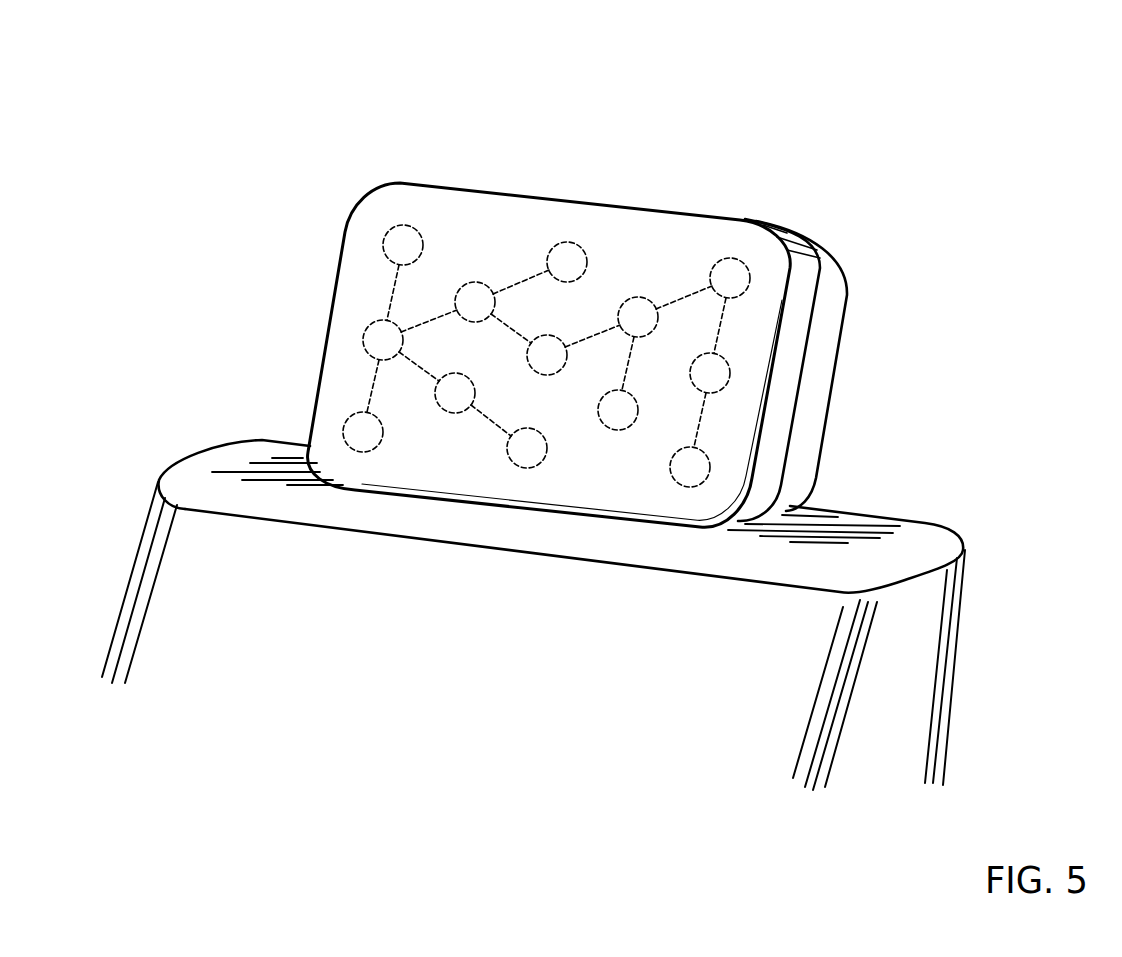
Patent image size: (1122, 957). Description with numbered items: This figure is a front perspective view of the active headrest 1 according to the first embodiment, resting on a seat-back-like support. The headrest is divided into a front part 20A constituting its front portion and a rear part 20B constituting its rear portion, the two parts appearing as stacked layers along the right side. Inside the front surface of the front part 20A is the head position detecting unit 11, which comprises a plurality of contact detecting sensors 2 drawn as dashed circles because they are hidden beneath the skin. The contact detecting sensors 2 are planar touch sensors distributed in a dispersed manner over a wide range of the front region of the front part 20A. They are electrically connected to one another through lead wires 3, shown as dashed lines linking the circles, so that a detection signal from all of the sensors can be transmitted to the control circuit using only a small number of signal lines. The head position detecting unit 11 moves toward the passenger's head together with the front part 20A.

The sensor device 1 is at (613, 112).
The contact detecting sensors 2 is at (360, 427).
The lead wire 3 is at (433, 313).
The head position detecting unit 11 is at (403, 222).
The front part 20A is at (803, 297).
The rear part 20B is at (830, 332).